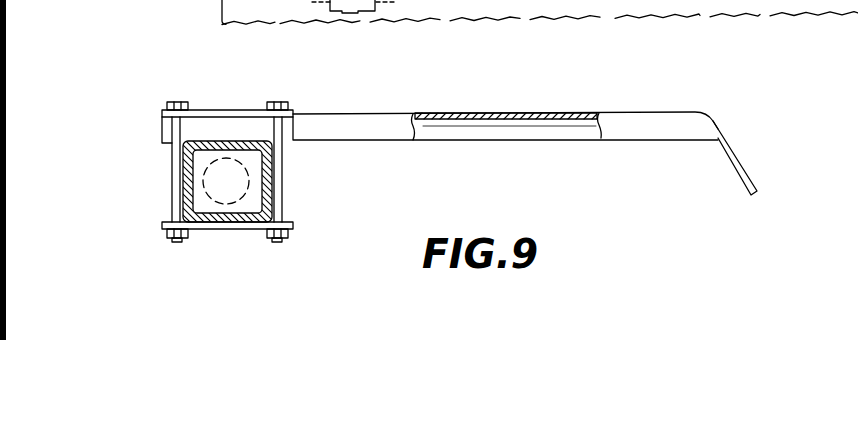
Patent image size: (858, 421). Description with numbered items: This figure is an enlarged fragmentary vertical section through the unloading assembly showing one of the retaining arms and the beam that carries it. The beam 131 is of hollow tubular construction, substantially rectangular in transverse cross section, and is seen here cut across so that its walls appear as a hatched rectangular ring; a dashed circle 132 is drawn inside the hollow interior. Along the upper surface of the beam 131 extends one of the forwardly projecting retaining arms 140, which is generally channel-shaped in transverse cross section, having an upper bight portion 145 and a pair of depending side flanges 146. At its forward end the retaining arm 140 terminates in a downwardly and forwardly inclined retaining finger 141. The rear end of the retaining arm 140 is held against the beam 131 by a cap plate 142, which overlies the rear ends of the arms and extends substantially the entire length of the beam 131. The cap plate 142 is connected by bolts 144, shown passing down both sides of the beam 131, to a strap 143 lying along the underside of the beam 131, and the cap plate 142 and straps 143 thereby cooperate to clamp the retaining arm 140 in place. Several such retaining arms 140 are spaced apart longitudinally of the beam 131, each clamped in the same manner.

The beam 131 is at (190, 175).
The cylindrical bore / rod 132 is at (207, 199).
The retaining arm 140 is at (400, 104).
The retaining finger 141 is at (748, 177).
The cap plate 142 is at (233, 110).
The strap 143 is at (230, 229).
The bolt 144 is at (177, 157).
The upper bight portion 145 is at (527, 112).
The side flange 146 is at (578, 128).